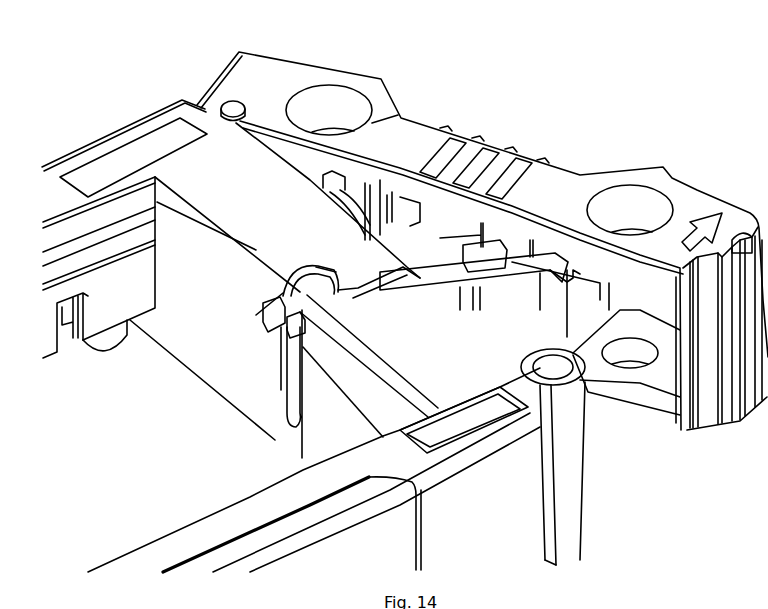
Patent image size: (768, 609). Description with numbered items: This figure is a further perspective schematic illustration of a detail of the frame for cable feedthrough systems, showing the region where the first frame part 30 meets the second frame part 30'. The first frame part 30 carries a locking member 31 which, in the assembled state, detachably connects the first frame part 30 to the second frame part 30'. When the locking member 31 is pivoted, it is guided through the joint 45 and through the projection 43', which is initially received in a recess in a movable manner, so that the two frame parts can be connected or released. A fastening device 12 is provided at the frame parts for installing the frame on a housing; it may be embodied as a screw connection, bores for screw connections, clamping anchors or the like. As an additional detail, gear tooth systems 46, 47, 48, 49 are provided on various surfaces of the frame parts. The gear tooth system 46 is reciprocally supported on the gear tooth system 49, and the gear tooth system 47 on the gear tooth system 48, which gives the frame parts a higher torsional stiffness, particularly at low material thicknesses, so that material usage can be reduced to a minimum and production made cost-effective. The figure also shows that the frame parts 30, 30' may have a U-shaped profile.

The first frame part 30 is at (156, 224).
The second frame part 30' is at (376, 470).
The locking member 31 is at (559, 188).
The fastening device 12 is at (329, 112).
The joint 45 is at (440, 247).
The gear tooth system 46 is at (307, 262).
The gear tooth system 47 is at (255, 308).
The gear tooth system 48 is at (297, 332).
The gear tooth system 49 is at (383, 320).
The projection 43' is at (624, 457).